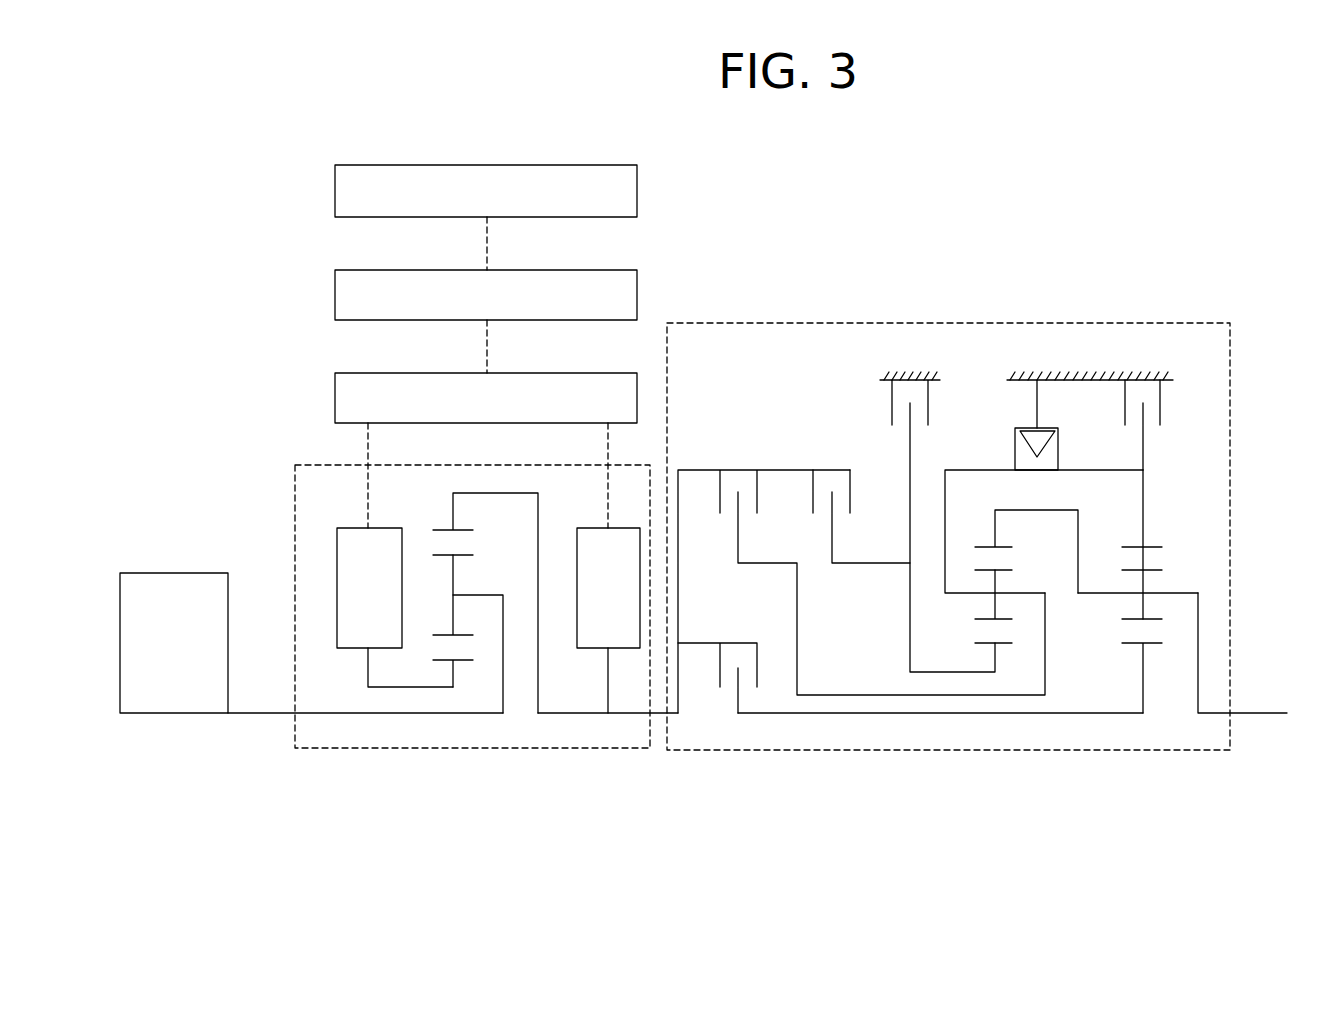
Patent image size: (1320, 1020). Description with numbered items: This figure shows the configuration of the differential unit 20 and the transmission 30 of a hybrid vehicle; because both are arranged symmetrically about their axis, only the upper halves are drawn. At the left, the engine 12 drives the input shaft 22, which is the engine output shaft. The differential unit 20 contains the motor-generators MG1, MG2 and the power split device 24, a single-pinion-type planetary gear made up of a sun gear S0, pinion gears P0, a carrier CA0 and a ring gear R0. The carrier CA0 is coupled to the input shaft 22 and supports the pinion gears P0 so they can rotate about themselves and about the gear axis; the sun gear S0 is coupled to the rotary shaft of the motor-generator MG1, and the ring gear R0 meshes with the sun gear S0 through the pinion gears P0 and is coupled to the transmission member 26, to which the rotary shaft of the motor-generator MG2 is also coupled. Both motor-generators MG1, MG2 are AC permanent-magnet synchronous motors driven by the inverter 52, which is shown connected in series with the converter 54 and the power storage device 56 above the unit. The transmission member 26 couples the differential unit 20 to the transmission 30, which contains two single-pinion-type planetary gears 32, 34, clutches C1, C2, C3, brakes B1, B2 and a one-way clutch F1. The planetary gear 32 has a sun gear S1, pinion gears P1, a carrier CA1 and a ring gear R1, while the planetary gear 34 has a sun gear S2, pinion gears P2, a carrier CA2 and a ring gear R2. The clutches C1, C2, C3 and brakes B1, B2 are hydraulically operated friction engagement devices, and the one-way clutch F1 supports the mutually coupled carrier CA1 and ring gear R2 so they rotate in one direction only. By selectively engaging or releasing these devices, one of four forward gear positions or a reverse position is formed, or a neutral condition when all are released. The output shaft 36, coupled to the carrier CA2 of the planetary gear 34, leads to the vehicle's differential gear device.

The engine 12 is at (205, 573).
The differential unit 20 is at (535, 466).
The input shaft 22 is at (268, 713).
The power split device 24 is at (476, 655).
The transmission member 26 is at (636, 715).
The transmission 30 is at (1170, 323).
The planetary gear 32 is at (1029, 646).
The planetary gear 34 is at (1142, 646).
The output shaft 36 is at (1252, 713).
The inverter 52 is at (588, 373).
The converter 54 is at (588, 270).
The power storage device 56 is at (588, 165).
The motor-generator MG1 is at (350, 528).
The motor-generator MG2 is at (590, 528).
The ring gear R0 is at (473, 530).
The carrier CA0 is at (466, 595).
The pinion gears P0 is at (440, 633).
The sun gear S0 is at (462, 663).
The clutch C1 is at (717, 663).
The clutch C2 is at (861, 576).
The clutch C3 is at (861, 501).
The brake B1 is at (937, 505).
The brake B2 is at (1146, 404).
The one-way clutch F1 is at (1090, 404).
The ring gear R1 is at (1012, 547).
The carrier CA1 is at (1005, 593).
The pinion gears P1 is at (975, 618).
The sun gear S1 is at (1004, 669).
The ring gear R2 is at (1162, 547).
The carrier CA2 is at (1155, 593).
The pinion gears P2 is at (1122, 618).
The sun gear S2 is at (1151, 732).